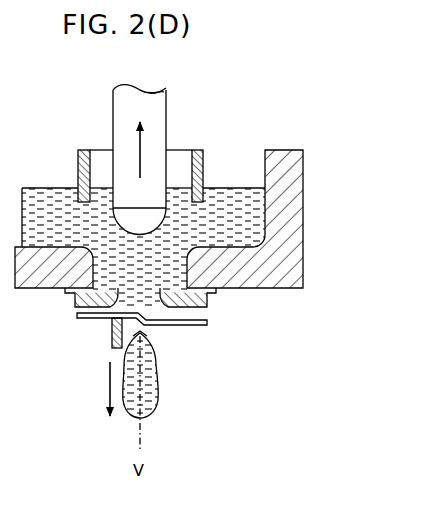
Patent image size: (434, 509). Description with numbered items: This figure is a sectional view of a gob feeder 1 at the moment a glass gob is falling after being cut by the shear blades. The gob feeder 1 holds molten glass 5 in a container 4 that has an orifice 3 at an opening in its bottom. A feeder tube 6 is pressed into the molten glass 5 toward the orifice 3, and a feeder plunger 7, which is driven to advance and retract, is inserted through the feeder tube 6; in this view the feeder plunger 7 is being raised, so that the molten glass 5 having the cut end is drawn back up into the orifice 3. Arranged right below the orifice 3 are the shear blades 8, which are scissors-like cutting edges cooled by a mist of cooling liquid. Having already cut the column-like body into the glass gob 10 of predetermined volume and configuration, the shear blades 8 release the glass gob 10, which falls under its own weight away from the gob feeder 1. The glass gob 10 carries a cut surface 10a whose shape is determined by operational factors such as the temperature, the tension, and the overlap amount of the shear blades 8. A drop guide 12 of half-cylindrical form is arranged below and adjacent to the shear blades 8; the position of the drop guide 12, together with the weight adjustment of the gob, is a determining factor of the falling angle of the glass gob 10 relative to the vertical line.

The gob feeder 1 is at (180, 190).
The orifice 3 is at (163, 298).
The container 4 is at (306, 218).
The molten glass 5 is at (233, 186).
The feeder tube 6 is at (77, 159).
The feeder plunger 7 is at (111, 118).
The shear blades 8 is at (80, 319).
The glass gob 10 is at (167, 390).
The cut surface 10a is at (143, 334).
The drop guide 12 is at (111, 330).